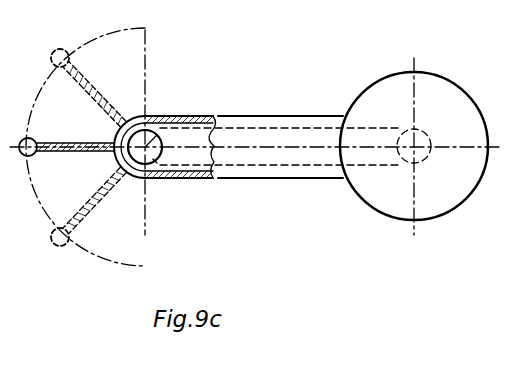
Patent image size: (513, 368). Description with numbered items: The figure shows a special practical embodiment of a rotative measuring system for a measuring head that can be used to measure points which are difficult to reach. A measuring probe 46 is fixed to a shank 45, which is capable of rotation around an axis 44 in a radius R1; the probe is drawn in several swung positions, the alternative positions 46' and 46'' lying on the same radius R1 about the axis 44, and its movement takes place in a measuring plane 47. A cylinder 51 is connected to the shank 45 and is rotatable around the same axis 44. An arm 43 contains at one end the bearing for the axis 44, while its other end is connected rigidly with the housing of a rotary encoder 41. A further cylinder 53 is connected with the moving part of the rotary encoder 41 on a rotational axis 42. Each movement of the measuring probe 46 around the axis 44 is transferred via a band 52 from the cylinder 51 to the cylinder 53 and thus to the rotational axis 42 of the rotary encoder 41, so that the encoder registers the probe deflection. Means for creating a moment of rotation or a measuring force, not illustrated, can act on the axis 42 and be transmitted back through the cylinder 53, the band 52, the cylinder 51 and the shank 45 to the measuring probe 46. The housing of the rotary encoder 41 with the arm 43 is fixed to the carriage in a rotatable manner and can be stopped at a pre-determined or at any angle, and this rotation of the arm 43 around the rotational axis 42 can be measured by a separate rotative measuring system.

The rotary encoder 41 is at (374, 92).
The rotational axis 42 is at (416, 142).
The arm 43 is at (267, 117).
The axis 44 is at (158, 122).
The shank 45 is at (63, 142).
The measuring probe 46 is at (25, 180).
The link pivot in second position 46' is at (69, 37).
The link pivot in third position 46'' is at (76, 259).
The measuring plane 47 is at (186, 56).
The cylinder 51 is at (163, 179).
The band 52 is at (200, 179).
The cylinder 53 is at (421, 154).
The radius R1 is at (118, 163).